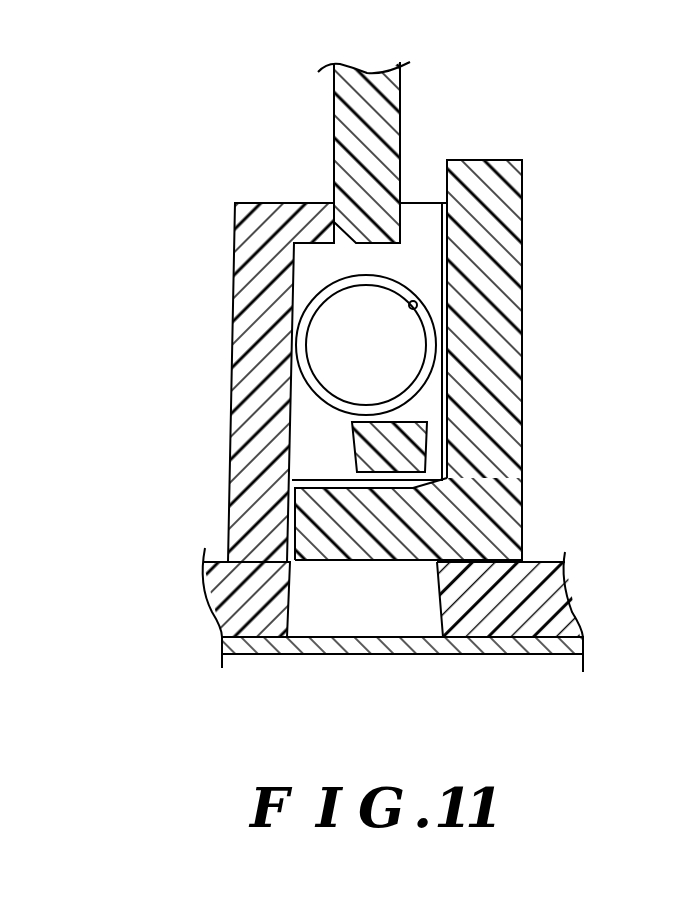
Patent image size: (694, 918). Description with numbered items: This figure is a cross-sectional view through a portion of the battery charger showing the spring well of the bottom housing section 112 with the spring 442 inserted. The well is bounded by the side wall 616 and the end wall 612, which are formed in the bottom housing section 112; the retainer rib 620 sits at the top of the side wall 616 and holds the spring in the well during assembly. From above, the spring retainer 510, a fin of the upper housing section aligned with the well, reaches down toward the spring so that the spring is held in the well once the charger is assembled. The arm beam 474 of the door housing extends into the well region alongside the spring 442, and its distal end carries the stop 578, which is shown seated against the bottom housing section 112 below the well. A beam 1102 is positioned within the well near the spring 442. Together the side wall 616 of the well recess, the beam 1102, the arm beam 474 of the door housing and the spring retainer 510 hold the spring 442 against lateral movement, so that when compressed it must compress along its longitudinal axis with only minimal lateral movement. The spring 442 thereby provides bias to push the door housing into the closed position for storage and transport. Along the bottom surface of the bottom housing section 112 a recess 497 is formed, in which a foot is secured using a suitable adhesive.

The spring retainer 510 is at (400, 92).
The end wall 612 is at (427, 218).
The retainer rib 620 is at (312, 232).
The arm beam 474 is at (523, 193).
The side wall 616 is at (252, 374).
The spring 442 is at (393, 290).
The beam 1102 is at (380, 440).
The stop 578 is at (365, 538).
The bottom housing section 112 is at (538, 564).
The recesses 497 is at (405, 655).